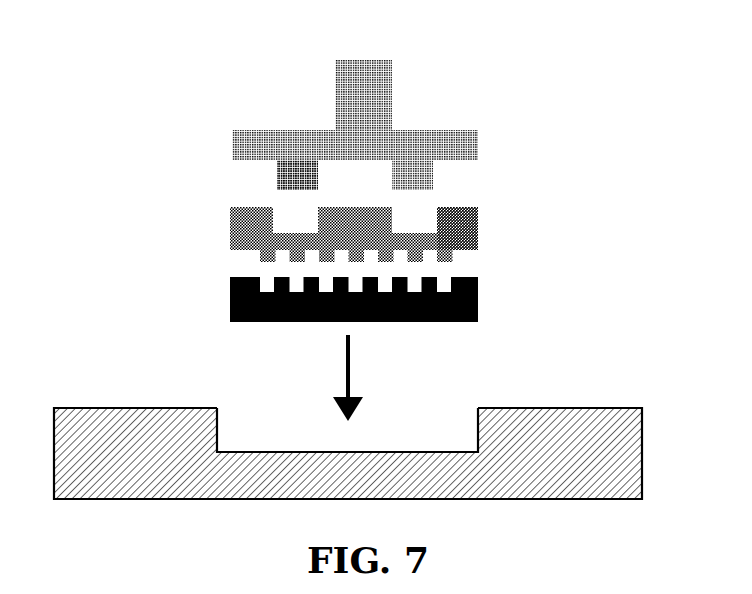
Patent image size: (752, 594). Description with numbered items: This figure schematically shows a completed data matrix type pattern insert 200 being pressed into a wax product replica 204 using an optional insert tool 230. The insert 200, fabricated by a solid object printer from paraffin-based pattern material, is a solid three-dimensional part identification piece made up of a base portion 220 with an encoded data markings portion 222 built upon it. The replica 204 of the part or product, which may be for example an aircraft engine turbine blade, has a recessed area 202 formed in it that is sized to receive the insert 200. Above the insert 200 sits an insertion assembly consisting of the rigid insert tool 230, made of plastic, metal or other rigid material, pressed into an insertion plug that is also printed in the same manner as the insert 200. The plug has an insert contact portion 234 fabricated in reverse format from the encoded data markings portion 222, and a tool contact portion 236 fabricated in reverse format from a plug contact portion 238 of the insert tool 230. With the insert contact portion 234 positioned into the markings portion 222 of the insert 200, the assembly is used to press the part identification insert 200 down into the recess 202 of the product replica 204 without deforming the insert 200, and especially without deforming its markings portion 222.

The pattern insert 200 is at (206, 297).
The insert tool 230 is at (368, 102).
The plug contact portion 238 is at (283, 176).
The insert contact portion 234 is at (324, 174).
The tool contact portion 236 is at (458, 210).
The base portion 220 is at (451, 265).
The encoded data markings portion 222 is at (437, 277).
The recessed area 202 is at (292, 428).
The replica 204 is at (370, 412).